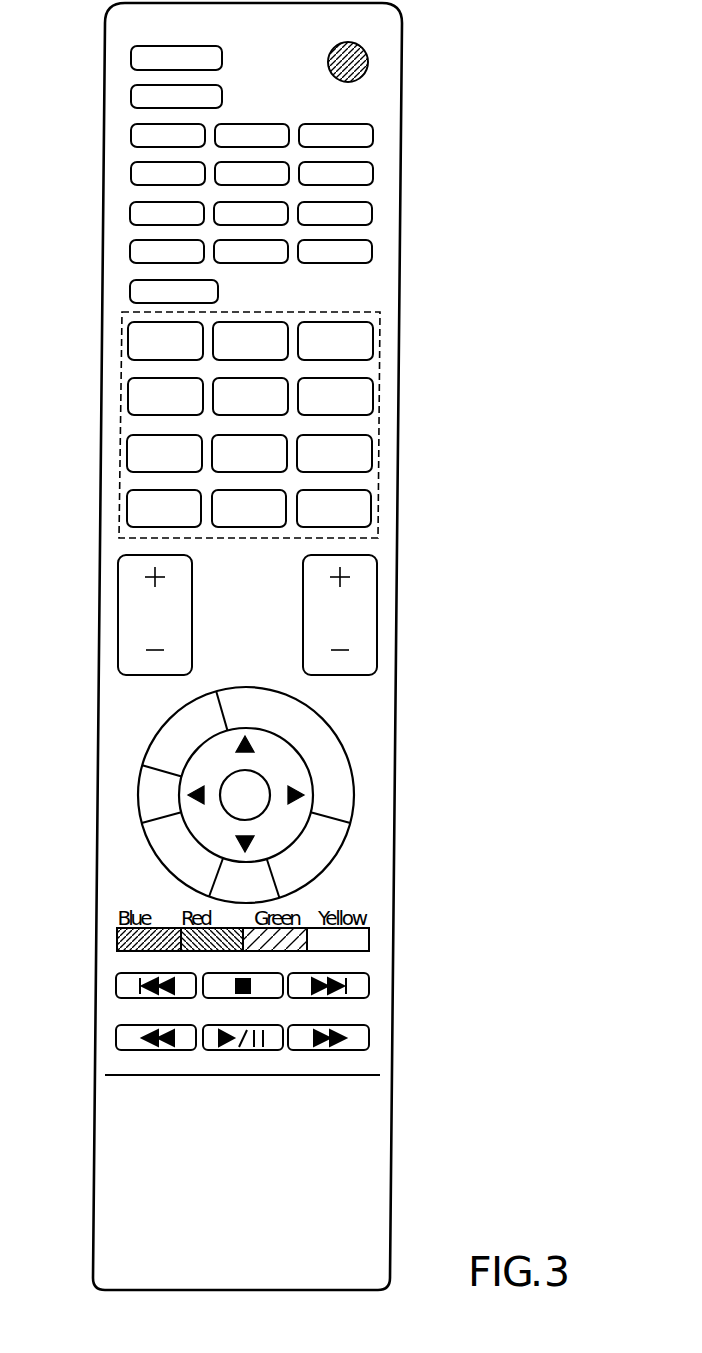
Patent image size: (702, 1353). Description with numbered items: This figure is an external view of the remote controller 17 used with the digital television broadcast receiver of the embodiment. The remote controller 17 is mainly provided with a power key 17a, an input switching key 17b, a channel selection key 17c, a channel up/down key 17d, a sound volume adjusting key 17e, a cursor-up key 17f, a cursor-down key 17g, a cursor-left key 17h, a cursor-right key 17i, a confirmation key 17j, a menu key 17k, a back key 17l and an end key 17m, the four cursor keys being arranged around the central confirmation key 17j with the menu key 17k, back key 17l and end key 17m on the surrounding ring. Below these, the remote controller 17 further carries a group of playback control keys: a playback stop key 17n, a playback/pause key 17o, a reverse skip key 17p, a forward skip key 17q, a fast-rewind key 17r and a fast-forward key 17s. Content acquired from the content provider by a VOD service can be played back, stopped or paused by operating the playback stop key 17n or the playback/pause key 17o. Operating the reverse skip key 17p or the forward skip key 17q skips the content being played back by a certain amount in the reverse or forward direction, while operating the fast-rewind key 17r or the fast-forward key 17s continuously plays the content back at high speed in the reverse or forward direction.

The remote controller 17 is at (403, 22).
The power key 17a is at (368, 62).
The input switching key 17b is at (133, 53).
The channel selection key 17c is at (380, 400).
The channel up/down key 17d is at (118, 583).
The sound volume adjusting key 17e is at (377, 587).
The cursor-up key 17f is at (247, 742).
The cursor-down key 17g is at (252, 843).
The cursor-left key 17h is at (193, 790).
The cursor-right key 17i is at (307, 790).
The confirmation key 17j is at (227, 807).
The menu key 17k is at (167, 715).
The back key 17l is at (153, 857).
The end key 17m is at (330, 853).
The playback stop key 17n is at (260, 998).
The playback/pause key 17o is at (233, 1023).
The reverse skip key 17p is at (116, 980).
The forward skip key 17q is at (369, 980).
The fast-rewind key 17r is at (116, 1038).
The fast-forward key 17s is at (369, 1038).